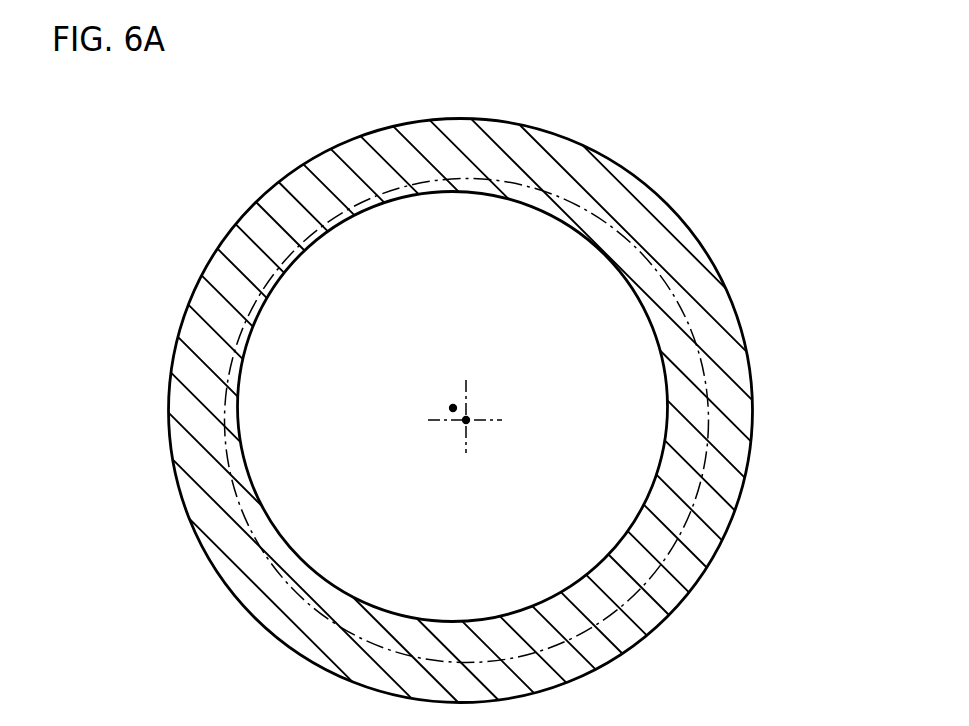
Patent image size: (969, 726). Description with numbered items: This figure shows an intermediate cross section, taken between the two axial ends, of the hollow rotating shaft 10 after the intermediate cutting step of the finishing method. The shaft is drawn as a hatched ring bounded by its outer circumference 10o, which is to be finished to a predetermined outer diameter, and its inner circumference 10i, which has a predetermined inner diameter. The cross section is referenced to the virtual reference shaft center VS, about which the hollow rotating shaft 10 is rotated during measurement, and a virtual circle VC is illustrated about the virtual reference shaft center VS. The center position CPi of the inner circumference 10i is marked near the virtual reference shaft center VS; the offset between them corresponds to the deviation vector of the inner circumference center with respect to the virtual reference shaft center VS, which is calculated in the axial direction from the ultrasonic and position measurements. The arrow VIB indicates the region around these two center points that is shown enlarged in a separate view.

The hollow rotating shaft 10 is at (550, 131).
The outer circumference 10o is at (393, 123).
The inner circumference 10i is at (496, 197).
The virtual circle VC is at (303, 241).
The center position of the inner circumference CPi is at (452, 405).
The virtual reference shaft center VS is at (468, 419).
The arrow VIB is at (431, 443).